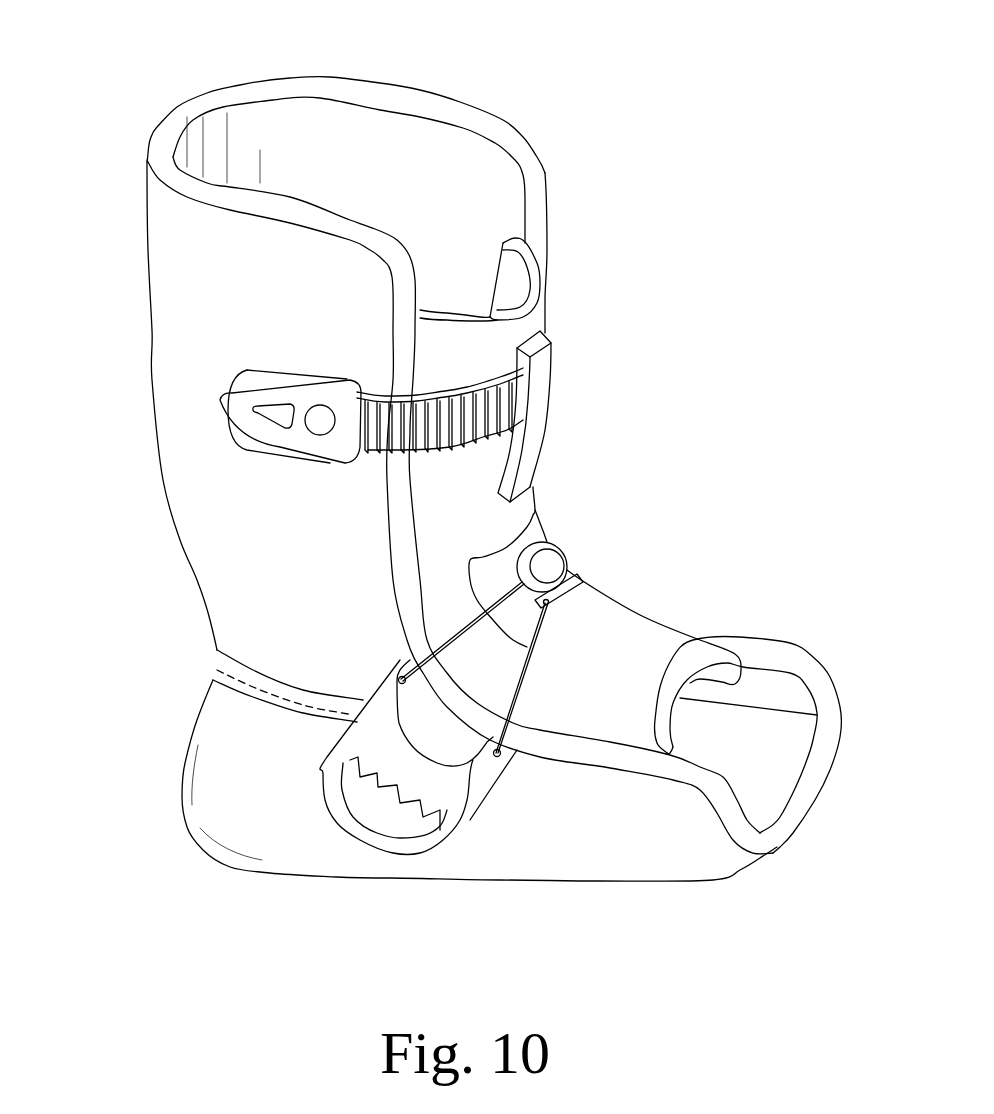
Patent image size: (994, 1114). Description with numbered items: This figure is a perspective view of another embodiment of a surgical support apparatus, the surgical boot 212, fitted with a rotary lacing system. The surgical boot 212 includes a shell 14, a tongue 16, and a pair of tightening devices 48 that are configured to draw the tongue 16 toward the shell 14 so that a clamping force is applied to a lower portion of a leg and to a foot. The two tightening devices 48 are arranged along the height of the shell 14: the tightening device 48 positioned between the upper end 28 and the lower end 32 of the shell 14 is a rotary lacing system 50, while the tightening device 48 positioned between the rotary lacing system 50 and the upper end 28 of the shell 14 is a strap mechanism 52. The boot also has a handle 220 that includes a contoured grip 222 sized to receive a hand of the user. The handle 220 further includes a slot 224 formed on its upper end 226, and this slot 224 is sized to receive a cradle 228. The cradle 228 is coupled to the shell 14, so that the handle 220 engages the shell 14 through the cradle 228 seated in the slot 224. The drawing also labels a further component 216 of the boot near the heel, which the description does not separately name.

The surgical boot 212 is at (658, 96).
The shell 14 is at (415, 112).
The upper end 28 is at (183, 122).
The strap mechanism 52 is at (200, 399).
The tightening device 48 is at (578, 403).
The rotary lacing system 50 is at (590, 549).
The tongue 16 is at (663, 627).
The lower end 32 is at (773, 843).
The cradle 228 is at (397, 704).
The upper end 226 is at (497, 762).
The heel plate 216 is at (357, 737).
The slot 224 is at (477, 767).
The contoured grip 222 is at (367, 825).
The handle 220 is at (453, 823).